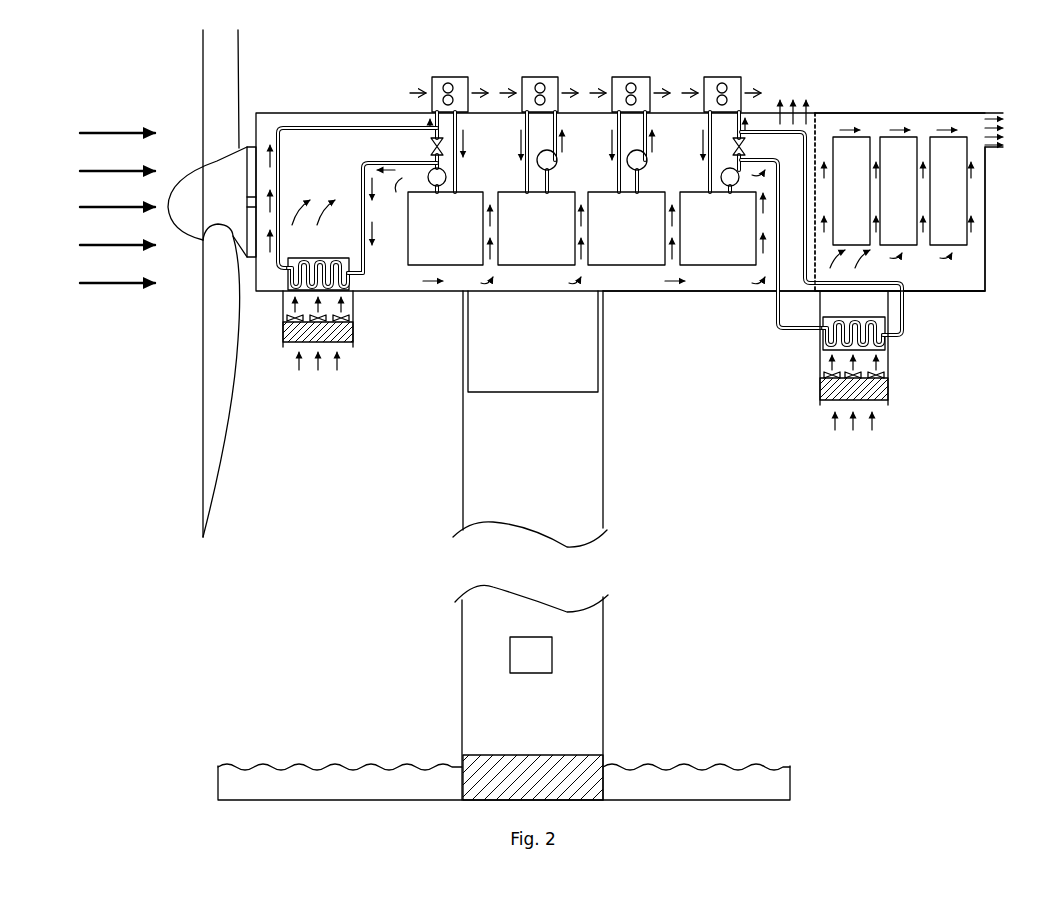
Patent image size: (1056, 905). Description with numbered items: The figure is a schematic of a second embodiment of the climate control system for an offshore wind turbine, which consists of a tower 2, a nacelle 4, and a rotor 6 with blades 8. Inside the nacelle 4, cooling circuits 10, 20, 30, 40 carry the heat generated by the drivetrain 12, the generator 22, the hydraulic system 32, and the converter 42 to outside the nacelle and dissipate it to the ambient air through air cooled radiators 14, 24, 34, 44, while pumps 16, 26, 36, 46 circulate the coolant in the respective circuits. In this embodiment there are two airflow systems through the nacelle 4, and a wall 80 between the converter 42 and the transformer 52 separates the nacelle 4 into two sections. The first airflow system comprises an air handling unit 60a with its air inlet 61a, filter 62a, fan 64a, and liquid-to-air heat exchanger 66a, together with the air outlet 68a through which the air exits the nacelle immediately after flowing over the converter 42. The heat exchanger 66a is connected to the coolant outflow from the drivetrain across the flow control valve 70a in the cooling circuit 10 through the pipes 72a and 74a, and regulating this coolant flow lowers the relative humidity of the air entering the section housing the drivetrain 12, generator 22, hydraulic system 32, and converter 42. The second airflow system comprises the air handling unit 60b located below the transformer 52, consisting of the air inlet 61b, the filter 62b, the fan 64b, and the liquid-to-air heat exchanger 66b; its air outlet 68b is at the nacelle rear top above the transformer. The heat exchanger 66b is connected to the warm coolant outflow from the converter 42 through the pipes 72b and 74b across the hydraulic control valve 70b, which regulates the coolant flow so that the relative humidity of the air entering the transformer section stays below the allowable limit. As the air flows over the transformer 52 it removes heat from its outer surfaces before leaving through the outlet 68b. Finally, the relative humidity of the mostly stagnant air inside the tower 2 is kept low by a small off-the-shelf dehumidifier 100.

The tower 2 is at (603, 672).
The nacelle 4 is at (900, 171).
The rotor 6 is at (200, 192).
The blades 8 is at (212, 380).
The cooling circuit 10 is at (440, 70).
The drivetrain 12 is at (436, 267).
The air cooled radiator 14 is at (432, 84).
The pump 16 is at (446, 177).
The cooling circuit 20 is at (531, 70).
The generator 22 is at (522, 267).
The air cooled radiator 24 is at (524, 84).
The pump 26 is at (557, 158).
The cooling circuit 30 is at (623, 70).
The hydraulic system 32 is at (612, 267).
The air cooled radiator 34 is at (614, 84).
The pump 36 is at (647, 158).
The cooling circuit 40 is at (713, 70).
The converter 42 is at (697, 267).
The air cooled radiator 44 is at (706, 84).
The pump 46 is at (721, 176).
The transformer 52 is at (948, 137).
The air handling unit 60a is at (283, 318).
The air handling unit 60b is at (820, 370).
The air inlet 61a is at (319, 372).
The air inlet 61b is at (855, 432).
The filter 62a is at (340, 337).
The filter 62b is at (878, 399).
The fan 64a is at (354, 321).
The fan 64b is at (890, 376).
The liquid-to-air heat exchanger 66a is at (330, 264).
The liquid-to-air heat exchanger 66b is at (866, 321).
The air outlet 68a is at (795, 100).
The air outlet 68b is at (1014, 132).
The flow control valve 70a is at (431, 147).
The hydraulic control valve 70b is at (745, 147).
The pipe 72a is at (363, 192).
The pipe 72b is at (778, 304).
The pipe 74a is at (279, 182).
The pipe 74b is at (903, 305).
The wall 80 is at (815, 268).
The dehumidifier 100 is at (510, 650).